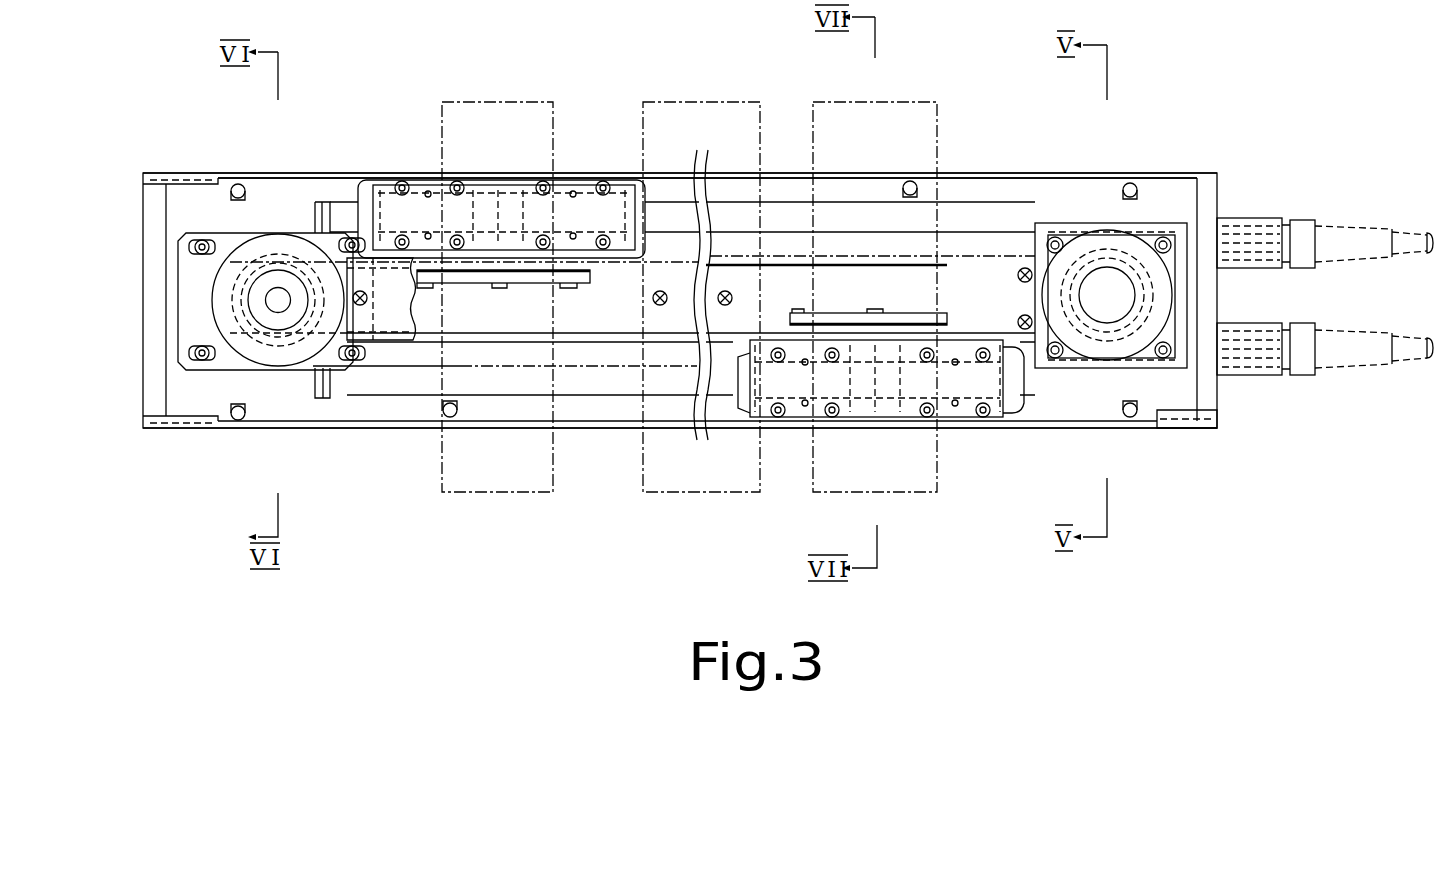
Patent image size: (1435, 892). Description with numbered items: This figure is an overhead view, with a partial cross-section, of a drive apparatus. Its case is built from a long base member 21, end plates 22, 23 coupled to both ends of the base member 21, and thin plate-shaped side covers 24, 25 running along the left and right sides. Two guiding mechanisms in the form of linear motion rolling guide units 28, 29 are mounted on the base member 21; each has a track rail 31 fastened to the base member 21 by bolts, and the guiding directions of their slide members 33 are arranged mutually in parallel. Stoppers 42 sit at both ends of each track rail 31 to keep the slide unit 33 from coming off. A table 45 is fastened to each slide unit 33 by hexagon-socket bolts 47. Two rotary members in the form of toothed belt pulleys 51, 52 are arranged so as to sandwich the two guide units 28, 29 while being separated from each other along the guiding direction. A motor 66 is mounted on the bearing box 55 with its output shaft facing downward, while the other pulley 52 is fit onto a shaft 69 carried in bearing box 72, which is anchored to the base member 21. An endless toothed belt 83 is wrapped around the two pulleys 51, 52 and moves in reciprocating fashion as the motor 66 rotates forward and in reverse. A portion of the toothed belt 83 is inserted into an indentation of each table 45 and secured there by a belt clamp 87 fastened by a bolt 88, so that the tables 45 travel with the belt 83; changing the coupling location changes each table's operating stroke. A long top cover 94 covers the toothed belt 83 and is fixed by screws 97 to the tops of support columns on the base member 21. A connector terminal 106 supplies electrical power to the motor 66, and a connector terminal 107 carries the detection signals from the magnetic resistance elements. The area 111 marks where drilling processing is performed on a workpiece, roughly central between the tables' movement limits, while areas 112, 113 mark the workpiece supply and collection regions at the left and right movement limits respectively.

The base member 21 is at (1148, 412).
The end plate 22 is at (153, 172).
The end plate 23 is at (1208, 405).
The side cover 24 is at (250, 172).
The side cover 25 is at (267, 337).
The linear motion rolling guide unit 28 is at (335, 172).
The linear motion rolling guide unit 29 is at (1036, 410).
The track rail 31 is at (840, 208).
The slide member 33 is at (415, 180).
The stopper 42 is at (308, 172).
The table 45 is at (562, 188).
The bolt 47 is at (456, 184).
The toothed belt pulley 51 is at (1117, 252).
The toothed belt pulley 52 is at (208, 430).
The bearing box 55 is at (1190, 210).
The motor 66 is at (1147, 257).
The shaft 69 is at (278, 305).
The bearing box 72 is at (226, 356).
The endless toothed belt 83 is at (773, 262).
The belt clamp 87 is at (478, 284).
The bolt 88 is at (503, 289).
The top cover 94 is at (975, 290).
The screw 97 is at (362, 305).
The connector terminal 106 is at (1304, 208).
The connector terminal 107 is at (1295, 387).
The drilling processing area 111 is at (703, 102).
The workpiece supply and collection area 112 is at (503, 102).
The workpiece supply and collection area 113 is at (885, 102).